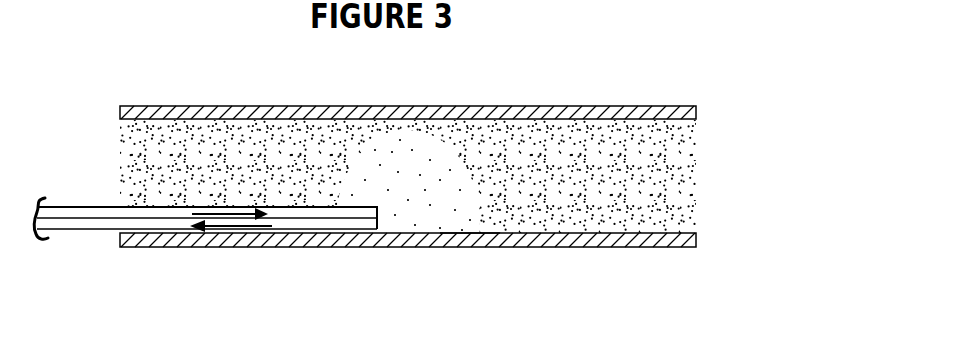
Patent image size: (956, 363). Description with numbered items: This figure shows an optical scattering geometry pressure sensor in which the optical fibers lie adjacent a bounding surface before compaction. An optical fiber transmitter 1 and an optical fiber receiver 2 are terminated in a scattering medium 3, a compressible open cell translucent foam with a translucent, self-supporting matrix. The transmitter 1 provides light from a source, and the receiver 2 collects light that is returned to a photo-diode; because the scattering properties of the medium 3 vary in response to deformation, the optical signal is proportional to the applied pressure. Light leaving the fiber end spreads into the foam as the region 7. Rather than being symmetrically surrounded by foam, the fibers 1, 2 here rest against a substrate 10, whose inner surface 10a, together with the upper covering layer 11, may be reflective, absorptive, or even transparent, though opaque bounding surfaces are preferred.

The optical fiber transmitter 1 is at (111, 214).
The optical fiber receiver 2 is at (118, 224).
The scattering medium 3 is at (673, 190).
The emitted light cone 7 is at (418, 196).
The substrate 10 is at (595, 248).
The inner surface of substrate 10a is at (452, 222).
The upper covering layer 11 is at (590, 119).